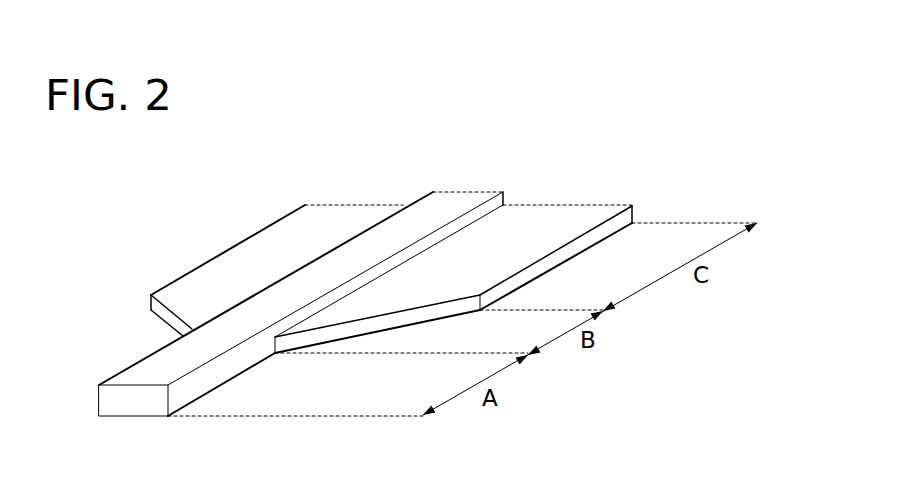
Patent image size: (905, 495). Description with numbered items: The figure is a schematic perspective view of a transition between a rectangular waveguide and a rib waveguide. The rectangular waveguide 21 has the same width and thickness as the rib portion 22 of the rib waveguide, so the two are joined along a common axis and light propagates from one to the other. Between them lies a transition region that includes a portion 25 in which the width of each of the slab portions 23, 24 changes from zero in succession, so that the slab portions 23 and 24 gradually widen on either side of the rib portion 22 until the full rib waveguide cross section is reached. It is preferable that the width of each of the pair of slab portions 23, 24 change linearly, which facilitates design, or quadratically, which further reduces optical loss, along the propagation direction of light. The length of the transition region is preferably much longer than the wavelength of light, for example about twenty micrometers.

The rectangular waveguide 21 is at (150, 363).
The rib portion 22 is at (452, 202).
The slab portion 23 is at (243, 267).
The slab portion 24 is at (538, 227).
The portion in which the width of each slab portion changes from zero 25 is at (172, 314).